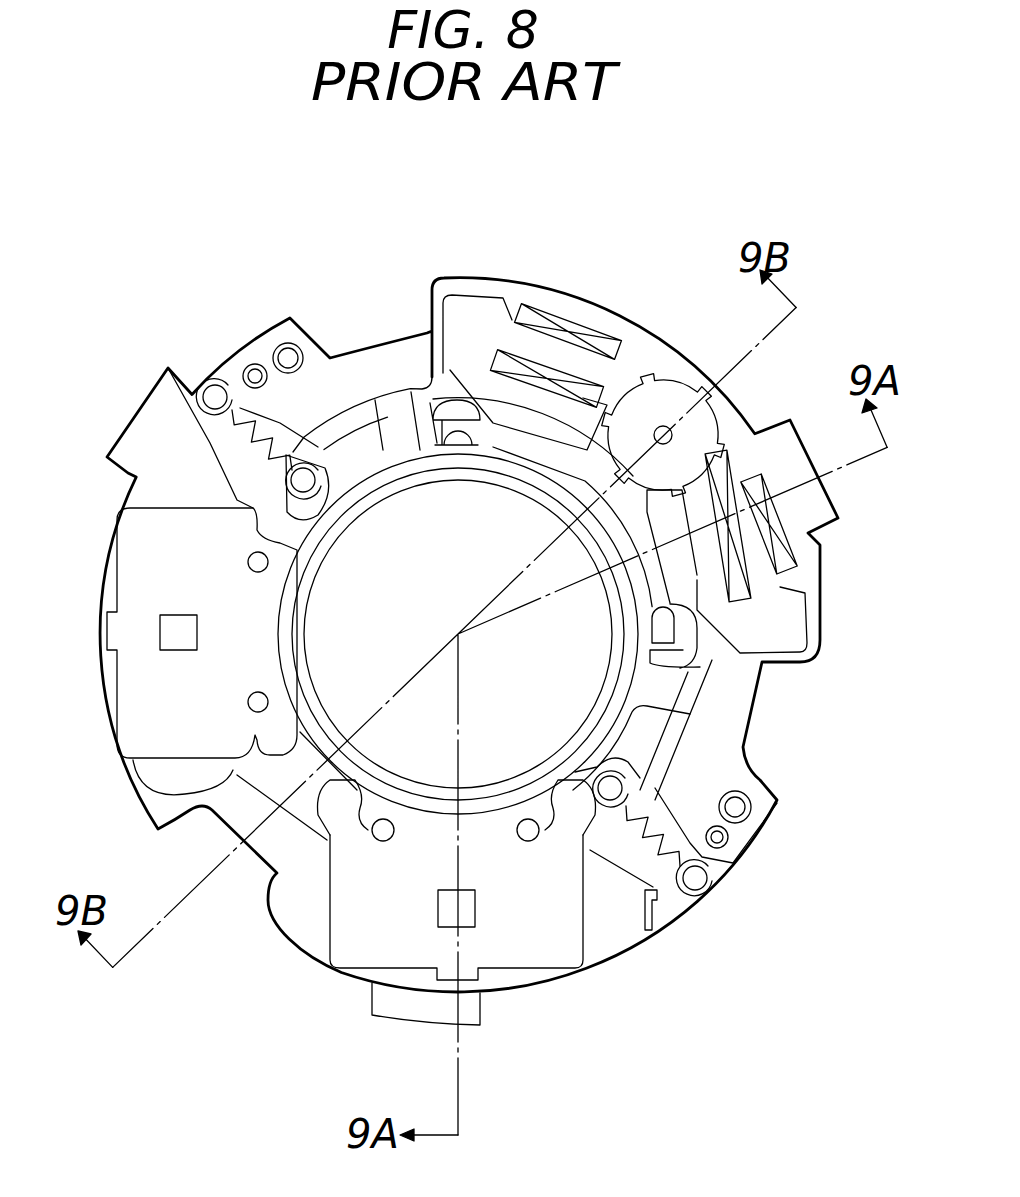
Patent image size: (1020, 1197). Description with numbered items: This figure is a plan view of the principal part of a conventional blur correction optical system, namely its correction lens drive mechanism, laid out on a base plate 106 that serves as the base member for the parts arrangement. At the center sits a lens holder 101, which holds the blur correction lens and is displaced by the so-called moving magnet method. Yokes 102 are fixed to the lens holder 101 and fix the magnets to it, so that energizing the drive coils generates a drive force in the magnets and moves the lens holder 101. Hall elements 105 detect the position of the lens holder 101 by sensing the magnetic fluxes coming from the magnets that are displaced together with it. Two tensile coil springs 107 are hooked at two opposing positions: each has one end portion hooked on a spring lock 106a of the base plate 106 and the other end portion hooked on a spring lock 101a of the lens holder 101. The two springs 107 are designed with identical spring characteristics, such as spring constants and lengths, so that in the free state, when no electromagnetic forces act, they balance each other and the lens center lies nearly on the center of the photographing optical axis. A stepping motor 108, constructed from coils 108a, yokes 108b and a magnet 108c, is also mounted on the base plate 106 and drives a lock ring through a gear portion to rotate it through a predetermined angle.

The lens holder 101 is at (312, 575).
The spring lock 101a is at (313, 483).
The yoke 102 is at (133, 540).
The Hall element 105 is at (178, 646).
The base plate 106 is at (267, 847).
The spring lock 106a is at (210, 388).
The tensile coil spring 107 is at (207, 432).
The stepping motor 108 is at (672, 205).
The coil 108a is at (572, 317).
The yoke 108b is at (483, 307).
The magnet 108c is at (667, 393).